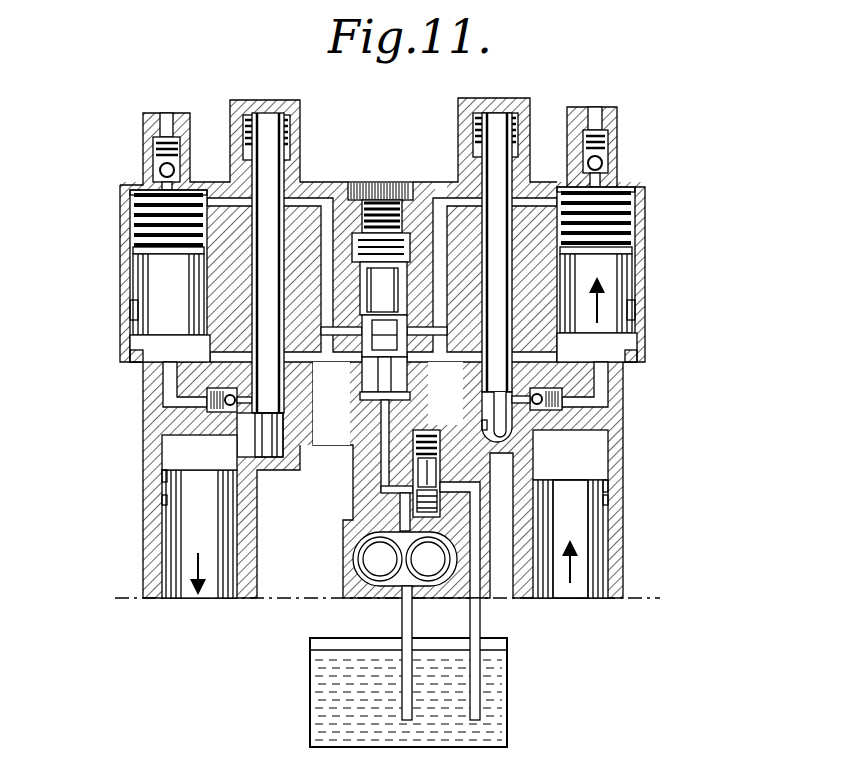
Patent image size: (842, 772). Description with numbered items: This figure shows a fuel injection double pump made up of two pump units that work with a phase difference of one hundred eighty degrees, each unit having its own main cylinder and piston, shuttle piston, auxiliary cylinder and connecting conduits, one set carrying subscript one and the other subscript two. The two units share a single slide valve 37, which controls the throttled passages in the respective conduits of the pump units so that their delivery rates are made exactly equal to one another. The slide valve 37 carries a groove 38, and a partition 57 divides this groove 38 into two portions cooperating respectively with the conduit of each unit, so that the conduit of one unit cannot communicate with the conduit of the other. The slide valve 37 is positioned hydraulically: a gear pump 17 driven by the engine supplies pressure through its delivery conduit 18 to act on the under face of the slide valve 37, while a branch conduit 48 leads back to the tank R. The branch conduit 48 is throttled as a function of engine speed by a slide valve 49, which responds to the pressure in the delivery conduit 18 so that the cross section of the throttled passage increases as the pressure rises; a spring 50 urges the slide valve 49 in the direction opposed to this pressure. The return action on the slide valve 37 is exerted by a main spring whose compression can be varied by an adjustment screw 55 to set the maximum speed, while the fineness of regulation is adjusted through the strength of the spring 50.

The groove 38 is at (358, 326).
The branch conduit 48 is at (407, 490).
The delivery conduit 18 is at (400, 508).
The gear pump 17 is at (355, 556).
The adjustment screw 55 is at (375, 190).
The slide valve 37 is at (393, 298).
The partition 57 is at (400, 320).
The spring 50 is at (438, 443).
The slide valve 49 is at (432, 470).
The tank R is at (310, 704).